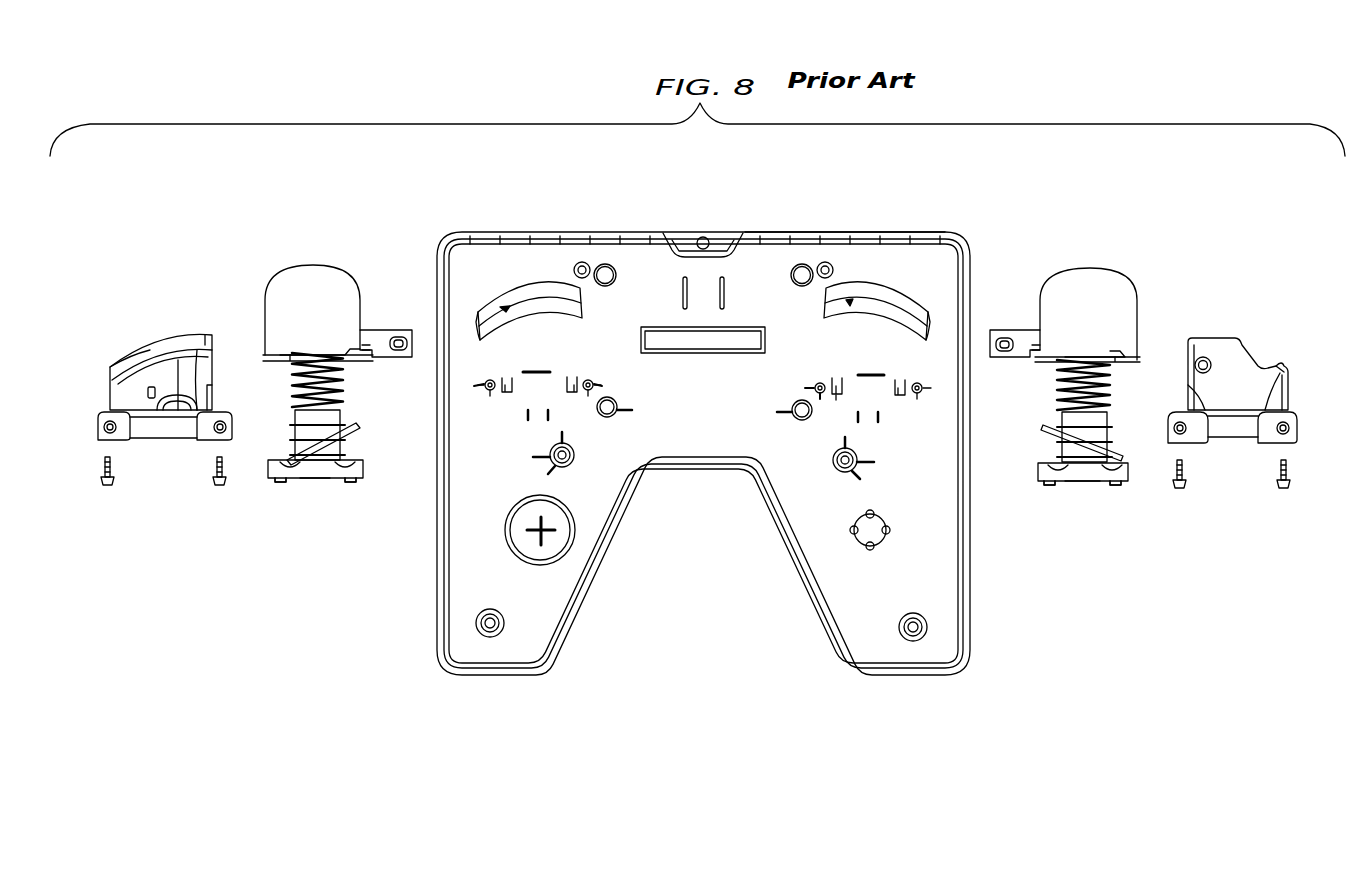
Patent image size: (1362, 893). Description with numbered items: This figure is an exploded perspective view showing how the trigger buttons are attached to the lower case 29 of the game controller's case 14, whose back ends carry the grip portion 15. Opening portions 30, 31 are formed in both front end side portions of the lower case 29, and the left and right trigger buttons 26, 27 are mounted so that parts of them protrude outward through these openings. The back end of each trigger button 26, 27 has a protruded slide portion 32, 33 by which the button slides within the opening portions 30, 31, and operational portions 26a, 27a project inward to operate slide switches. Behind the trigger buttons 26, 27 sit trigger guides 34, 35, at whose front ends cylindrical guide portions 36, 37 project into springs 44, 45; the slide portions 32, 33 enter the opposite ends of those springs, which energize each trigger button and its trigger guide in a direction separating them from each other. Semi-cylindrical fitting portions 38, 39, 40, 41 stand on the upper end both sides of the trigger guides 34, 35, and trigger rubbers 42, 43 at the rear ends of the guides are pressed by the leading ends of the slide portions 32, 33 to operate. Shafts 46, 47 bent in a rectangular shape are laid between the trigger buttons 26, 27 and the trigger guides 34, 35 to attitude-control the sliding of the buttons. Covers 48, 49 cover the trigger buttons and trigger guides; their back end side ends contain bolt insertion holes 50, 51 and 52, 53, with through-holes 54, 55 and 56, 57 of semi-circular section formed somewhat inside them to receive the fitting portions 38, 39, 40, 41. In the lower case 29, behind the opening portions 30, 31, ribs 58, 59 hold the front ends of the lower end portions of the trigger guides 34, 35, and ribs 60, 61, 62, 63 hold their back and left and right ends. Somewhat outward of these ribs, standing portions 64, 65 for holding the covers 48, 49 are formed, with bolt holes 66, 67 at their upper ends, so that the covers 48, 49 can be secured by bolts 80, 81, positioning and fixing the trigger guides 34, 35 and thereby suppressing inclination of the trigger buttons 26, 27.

The case 14 is at (622, 222).
The grip portion 15 is at (753, 222).
The lower case 29 is at (693, 226).
The opening portion 30 is at (503, 308).
The opening portion 31 is at (849, 303).
The trigger button 26 is at (288, 280).
The operational portion 26a is at (388, 328).
The trigger button 27 is at (1107, 272).
The operational portion 27a is at (1005, 330).
The slide portion 32 is at (282, 357).
The slide portion 33 is at (1095, 353).
The trigger guide 34 is at (376, 465).
The trigger guide 35 is at (1128, 469).
The cylindrical guide portion 36 is at (295, 428).
The cylindrical guide portion 37 is at (1108, 420).
The semi-cylindrical fitting portion 38 is at (290, 484).
The semi-cylindrical fitting portion 39 is at (345, 484).
The semi-cylindrical fitting portion 40 is at (1050, 486).
The semi-cylindrical fitting portion 41 is at (1115, 486).
The trigger rubber 42 is at (315, 484).
The trigger rubber 43 is at (1082, 486).
The spring 44 is at (345, 401).
The spring 45 is at (1062, 377).
The shaft 46 is at (361, 427).
The shaft 47 is at (1042, 428).
The cover 48 is at (155, 343).
The cover 49 is at (1207, 338).
The bolt insertion hole 50 is at (103, 423).
The bolt insertion hole 51 is at (220, 418).
The bolt insertion hole 52 is at (1175, 423).
The bolt insertion hole 53 is at (1289, 431).
The through-hole 54 is at (122, 377).
The through-hole 55 is at (208, 345).
The through-hole 56 is at (1193, 383).
The through-hole 57 is at (1281, 373).
The rib 58 is at (537, 370).
The rib 59 is at (873, 372).
The rib 60 is at (505, 394).
The rib 61 is at (573, 394).
The rib 62 is at (837, 396).
The rib 63 is at (898, 396).
The standing portion 64 is at (483, 386).
The standing portion 65 is at (814, 388).
The bolt hole 66 is at (489, 380).
The bolt hole 67 is at (821, 382).
The bolt 80 is at (109, 487).
The bolt 81 is at (1179, 490).